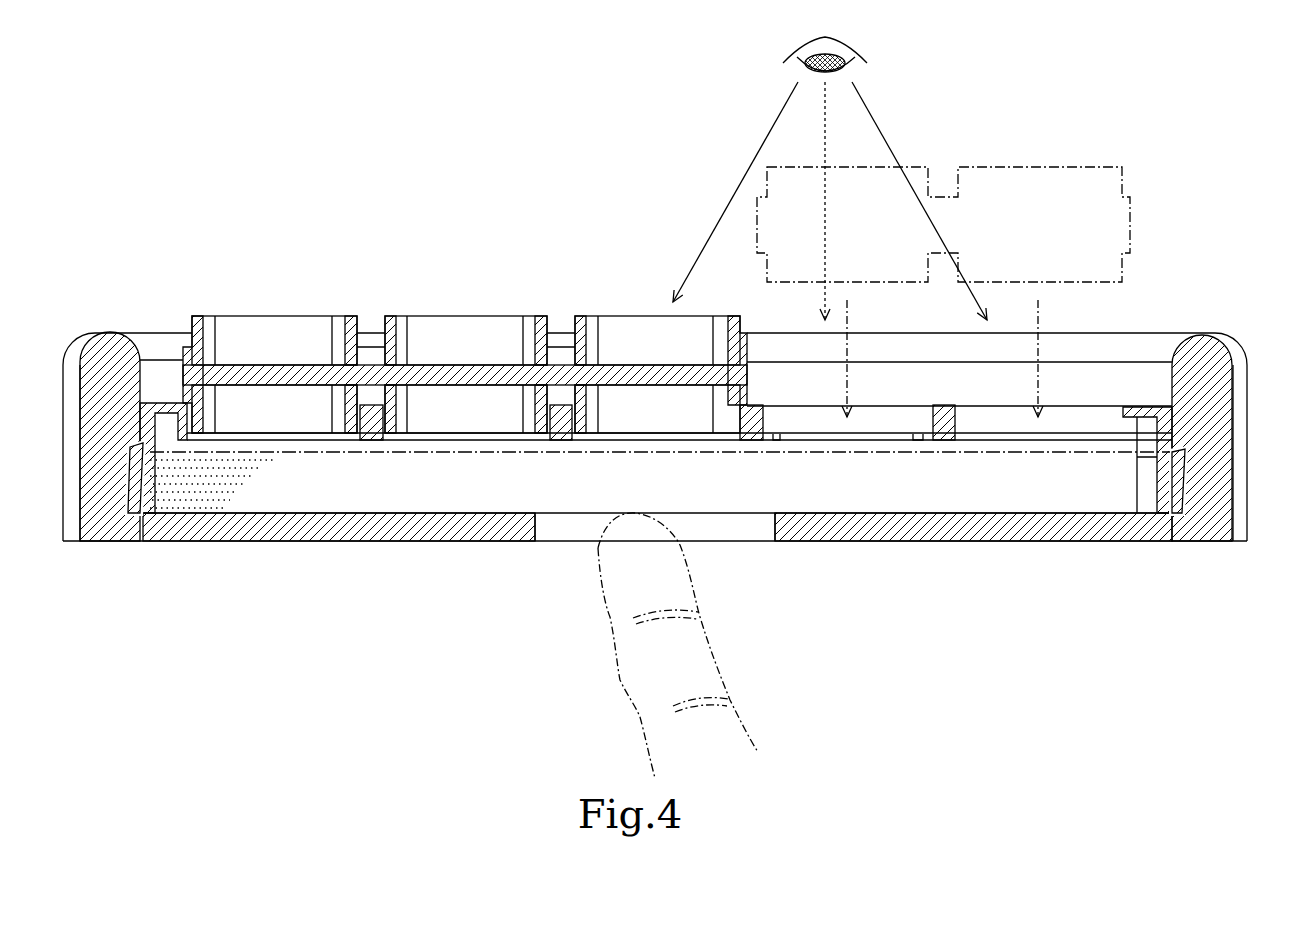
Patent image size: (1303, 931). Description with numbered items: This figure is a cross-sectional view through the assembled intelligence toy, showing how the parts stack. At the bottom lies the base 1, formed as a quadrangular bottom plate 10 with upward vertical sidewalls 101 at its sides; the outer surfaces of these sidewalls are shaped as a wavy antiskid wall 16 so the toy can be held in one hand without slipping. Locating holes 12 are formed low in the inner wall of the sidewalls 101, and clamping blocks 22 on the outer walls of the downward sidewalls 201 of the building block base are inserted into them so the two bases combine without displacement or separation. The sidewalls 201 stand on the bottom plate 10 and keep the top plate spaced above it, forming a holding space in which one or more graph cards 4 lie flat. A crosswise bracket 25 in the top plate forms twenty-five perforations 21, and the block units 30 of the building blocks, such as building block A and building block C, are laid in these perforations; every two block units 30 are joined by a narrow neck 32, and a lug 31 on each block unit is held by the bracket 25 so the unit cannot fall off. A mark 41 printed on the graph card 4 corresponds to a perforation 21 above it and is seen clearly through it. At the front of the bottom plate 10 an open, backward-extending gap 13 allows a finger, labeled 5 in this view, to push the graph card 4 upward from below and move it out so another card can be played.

The base 1 is at (300, 556).
The graph card 4 is at (240, 457).
The finger 5 is at (620, 680).
The bottom plate 10 is at (1065, 527).
The locating holes 12 is at (133, 543).
The gap 13 is at (768, 532).
The antiskid wall 16 is at (63, 495).
The perforations 21 is at (438, 437).
The clamping blocks 22 is at (155, 505).
The bracket 25 is at (367, 443).
The block units 30 is at (283, 330).
The lug 31 is at (186, 360).
The narrow neck 32 is at (370, 360).
The mark 41 is at (1073, 450).
The sidewalls 101 is at (95, 545).
The sidewalls 201 is at (197, 457).
The building block A is at (1040, 167).
The building block C is at (477, 375).